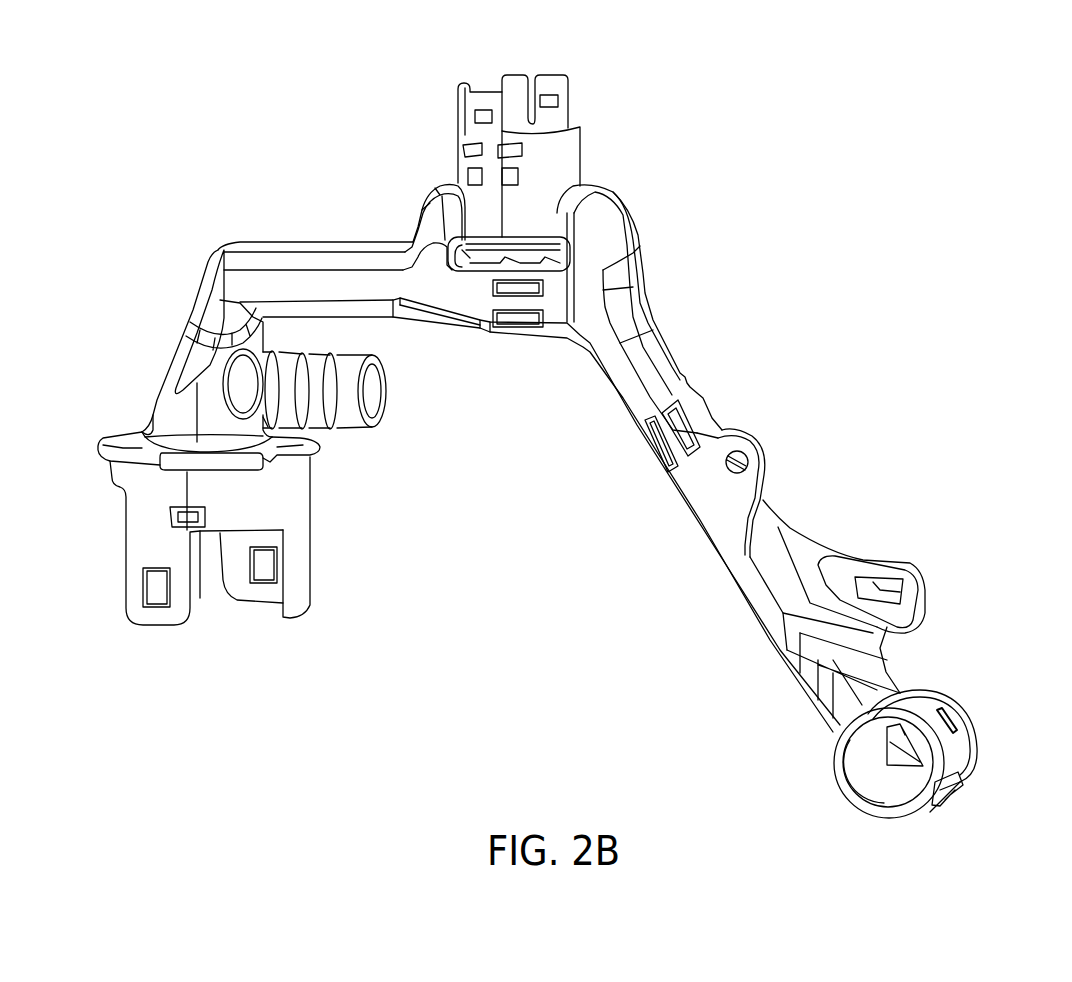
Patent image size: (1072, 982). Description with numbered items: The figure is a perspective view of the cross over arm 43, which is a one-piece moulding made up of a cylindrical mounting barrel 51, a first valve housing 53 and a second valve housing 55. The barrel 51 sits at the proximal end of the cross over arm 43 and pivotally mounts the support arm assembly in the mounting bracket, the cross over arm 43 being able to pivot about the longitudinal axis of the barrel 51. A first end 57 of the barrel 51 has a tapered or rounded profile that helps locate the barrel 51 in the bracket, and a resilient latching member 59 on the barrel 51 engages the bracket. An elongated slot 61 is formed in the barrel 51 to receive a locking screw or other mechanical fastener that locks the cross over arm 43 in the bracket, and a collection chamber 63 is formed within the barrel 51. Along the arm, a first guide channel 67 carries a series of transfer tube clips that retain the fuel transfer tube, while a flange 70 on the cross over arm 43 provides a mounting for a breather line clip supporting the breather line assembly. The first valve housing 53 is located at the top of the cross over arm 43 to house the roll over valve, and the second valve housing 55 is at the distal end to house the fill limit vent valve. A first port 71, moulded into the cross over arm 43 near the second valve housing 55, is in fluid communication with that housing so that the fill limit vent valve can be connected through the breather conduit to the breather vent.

The cross over arm 43 is at (717, 287).
The cylindrical mounting barrel 51 is at (847, 820).
The first valve housing 53 is at (553, 127).
The second valve housing 55 is at (148, 518).
The first end 57 is at (865, 782).
The resilient latching member 59 is at (965, 793).
The elongated slot 61 is at (948, 717).
The collection chamber 63 is at (897, 743).
The first guide channel 67 is at (885, 557).
The flange 70 is at (741, 451).
The first port 71 is at (335, 395).